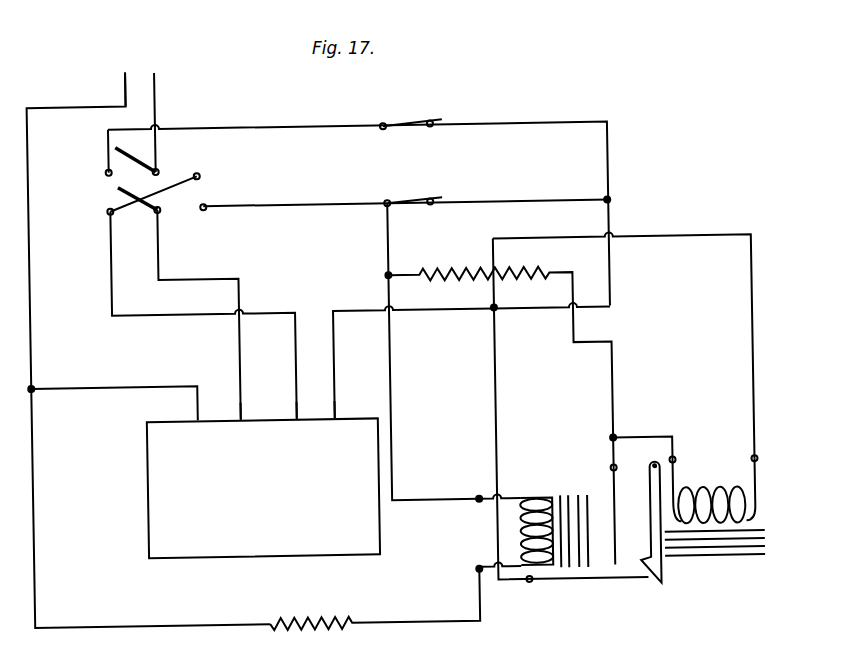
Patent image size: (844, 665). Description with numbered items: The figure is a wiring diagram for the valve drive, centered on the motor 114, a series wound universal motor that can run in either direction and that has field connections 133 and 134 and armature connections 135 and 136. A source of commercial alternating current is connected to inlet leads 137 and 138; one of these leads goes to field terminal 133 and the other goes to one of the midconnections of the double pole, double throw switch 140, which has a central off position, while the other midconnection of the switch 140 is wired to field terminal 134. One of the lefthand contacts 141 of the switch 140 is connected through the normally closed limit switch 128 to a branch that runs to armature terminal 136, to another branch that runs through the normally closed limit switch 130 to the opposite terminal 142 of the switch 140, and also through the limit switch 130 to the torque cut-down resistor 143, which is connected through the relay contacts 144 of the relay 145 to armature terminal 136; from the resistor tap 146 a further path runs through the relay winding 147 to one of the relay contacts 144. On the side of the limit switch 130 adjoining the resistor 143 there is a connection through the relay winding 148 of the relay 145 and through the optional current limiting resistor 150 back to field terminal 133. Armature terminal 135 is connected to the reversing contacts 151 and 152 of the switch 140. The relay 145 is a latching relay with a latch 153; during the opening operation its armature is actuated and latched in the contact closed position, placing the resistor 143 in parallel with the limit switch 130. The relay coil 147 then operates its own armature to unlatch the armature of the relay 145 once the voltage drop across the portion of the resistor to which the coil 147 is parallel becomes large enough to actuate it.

The motor 114 is at (263, 488).
The limit switch 128 is at (404, 125).
The limit switch 130 is at (421, 187).
The field connection 133 is at (197, 398).
The field connection 134 is at (241, 415).
The armature connection 135 is at (298, 415).
The armature connection 136 is at (334, 414).
The inlet lead 137 is at (130, 78).
The inlet lead 138 is at (180, 75).
The double pole, double throw switch 140 is at (163, 166).
The lefthand contact 141 is at (109, 168).
The opposite terminal 142 is at (206, 207).
The torque cut-down resistor 143 is at (447, 273).
The relay contacts 144 is at (604, 582).
The relay 145 is at (574, 496).
The resistor tap 146 is at (529, 239).
The relay winding 147 is at (718, 483).
The relay winding 148 is at (531, 499).
The current limiting resistor 150 is at (318, 617).
The reversing contact 151 is at (110, 207).
The reversing contact 152 is at (203, 174).
The latch 153 is at (658, 582).